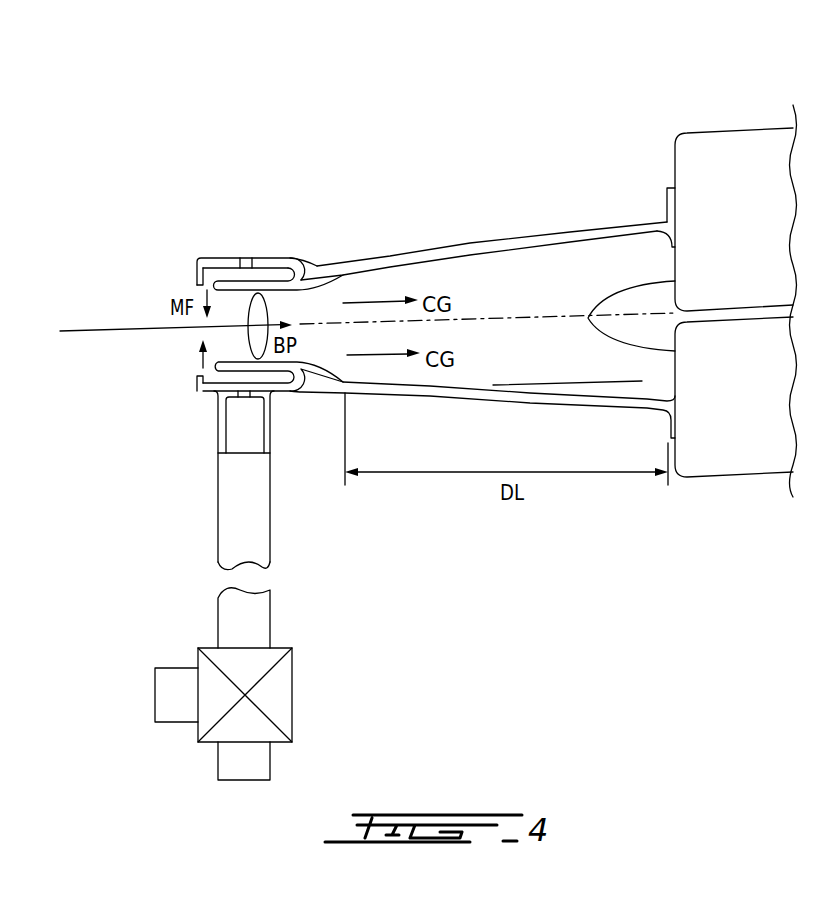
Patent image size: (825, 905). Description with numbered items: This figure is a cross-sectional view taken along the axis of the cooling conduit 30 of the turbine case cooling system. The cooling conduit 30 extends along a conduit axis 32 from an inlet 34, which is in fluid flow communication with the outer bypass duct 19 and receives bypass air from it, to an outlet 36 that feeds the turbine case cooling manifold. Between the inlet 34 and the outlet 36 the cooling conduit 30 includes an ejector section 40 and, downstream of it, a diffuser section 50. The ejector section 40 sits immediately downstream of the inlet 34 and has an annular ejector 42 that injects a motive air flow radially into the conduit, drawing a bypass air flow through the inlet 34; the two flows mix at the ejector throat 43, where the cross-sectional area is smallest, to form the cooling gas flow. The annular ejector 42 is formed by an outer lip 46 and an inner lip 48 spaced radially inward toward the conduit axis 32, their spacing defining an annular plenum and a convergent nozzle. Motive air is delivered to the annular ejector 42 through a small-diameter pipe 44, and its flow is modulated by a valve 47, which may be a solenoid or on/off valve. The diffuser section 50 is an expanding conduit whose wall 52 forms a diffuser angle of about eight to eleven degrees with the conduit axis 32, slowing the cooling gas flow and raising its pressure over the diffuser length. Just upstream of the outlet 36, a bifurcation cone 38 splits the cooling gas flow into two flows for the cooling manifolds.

The outer bypass duct 19 is at (119, 191).
The cooling conduit 30 is at (208, 140).
The conduit axis 32 is at (462, 320).
The inlet 34 is at (195, 342).
The outlet 36 is at (672, 247).
The bifurcation cone 38 is at (632, 286).
The ejector section 40 is at (252, 217).
The annular ejector 42 is at (316, 265).
The ejector throat 43 is at (260, 293).
The pipe 44 is at (217, 532).
The outer lip 46 is at (213, 258).
The valve 47 is at (198, 697).
The inner lip 48 is at (259, 359).
The diffuser section 50 is at (484, 188).
The wall 52 is at (570, 231).